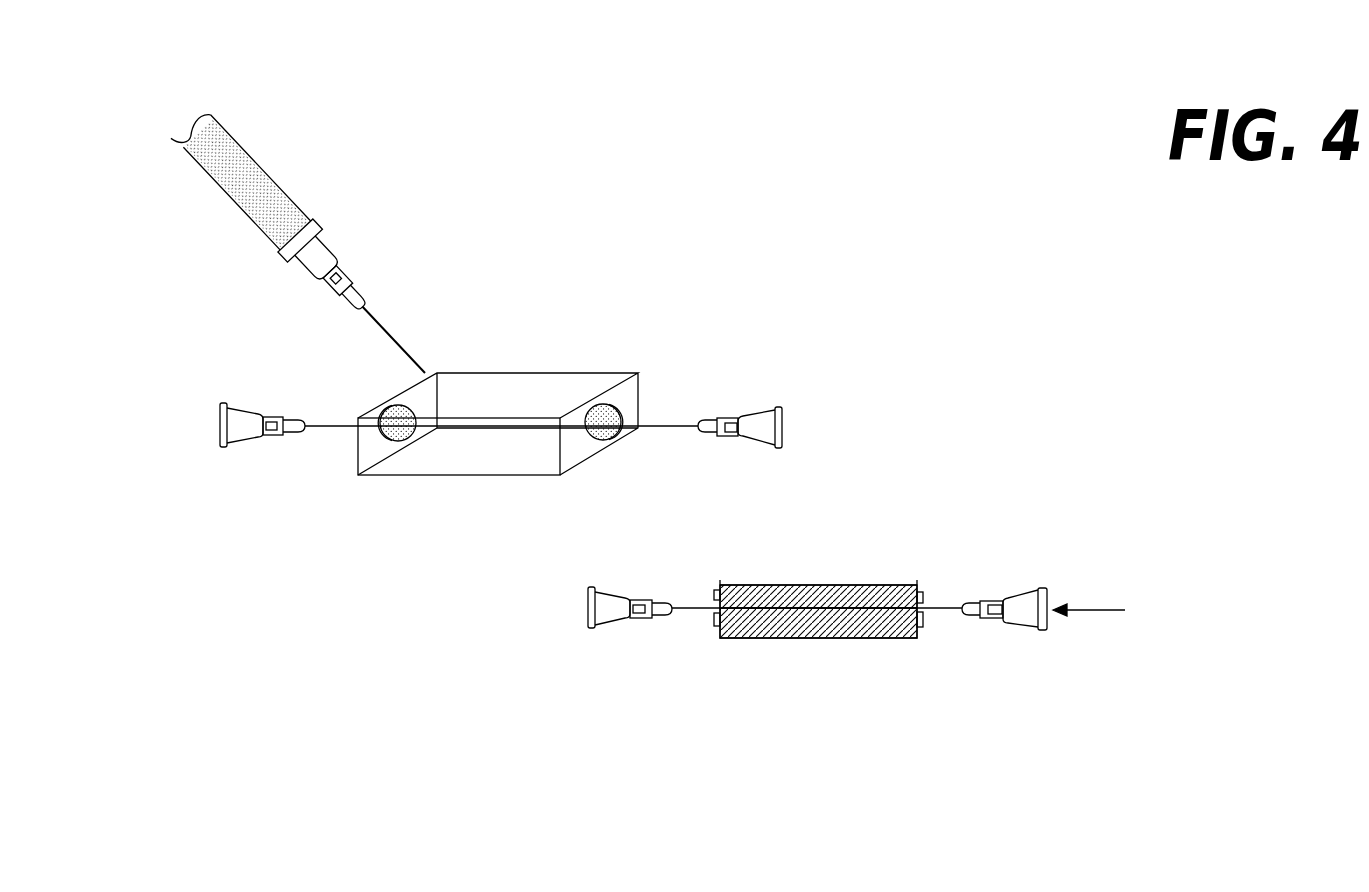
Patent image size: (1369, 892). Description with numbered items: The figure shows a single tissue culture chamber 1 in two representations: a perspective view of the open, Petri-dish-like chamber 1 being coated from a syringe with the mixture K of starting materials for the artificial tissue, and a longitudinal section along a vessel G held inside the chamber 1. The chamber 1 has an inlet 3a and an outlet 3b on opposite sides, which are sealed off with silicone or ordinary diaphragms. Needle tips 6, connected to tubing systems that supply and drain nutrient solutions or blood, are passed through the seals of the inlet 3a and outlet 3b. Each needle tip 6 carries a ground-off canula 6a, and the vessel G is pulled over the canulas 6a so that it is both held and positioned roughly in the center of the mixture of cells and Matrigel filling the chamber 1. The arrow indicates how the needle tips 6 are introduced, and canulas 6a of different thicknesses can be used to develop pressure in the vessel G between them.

The mixture of starting materials K is at (267, 178).
The block 1 is at (465, 476).
The inlet 3a is at (603, 443).
The outlet 3b is at (400, 402).
The needle tip 6 is at (248, 443).
The canula 6a is at (327, 427).
The vessel G is at (850, 590).